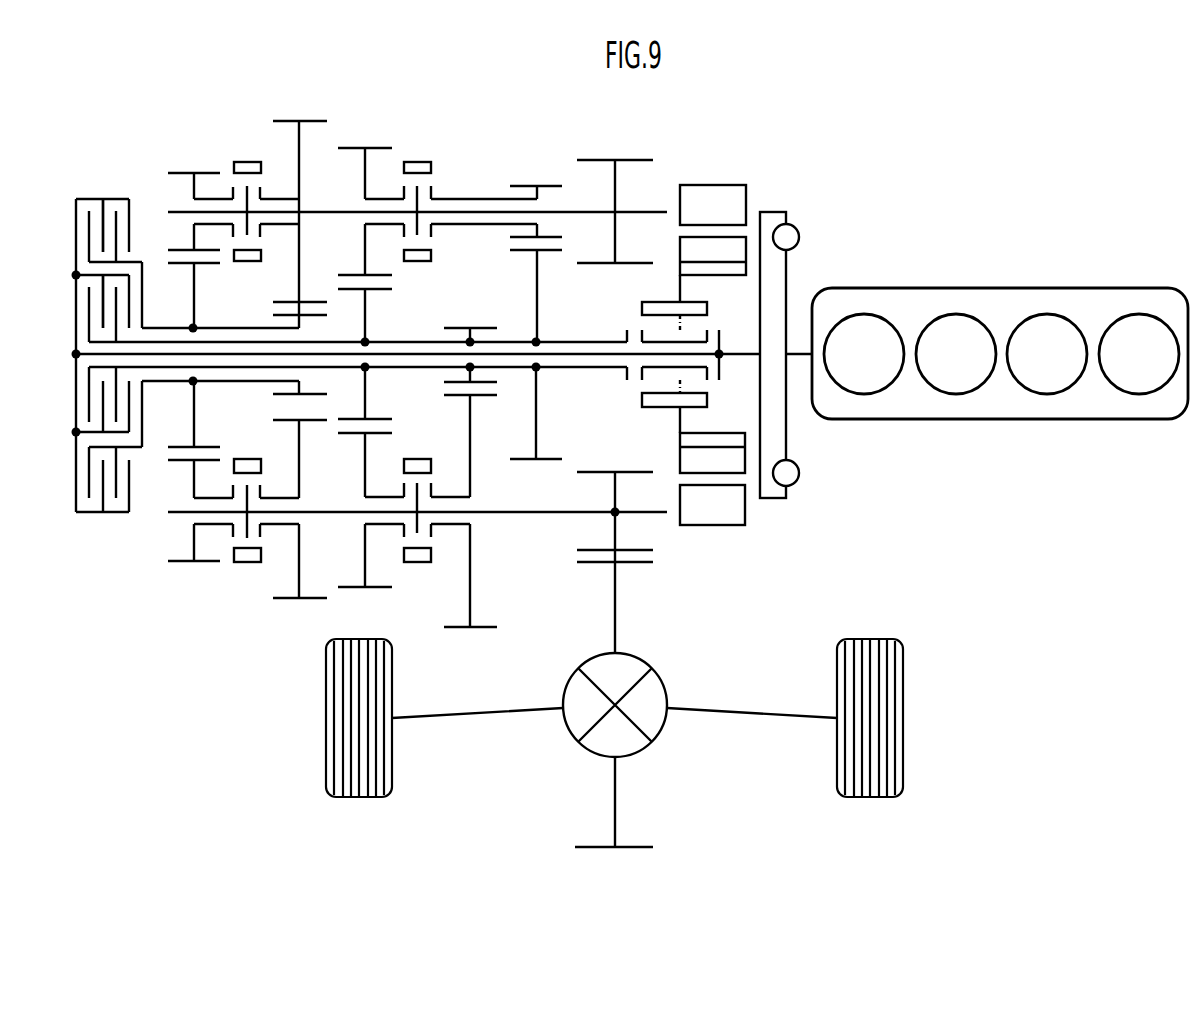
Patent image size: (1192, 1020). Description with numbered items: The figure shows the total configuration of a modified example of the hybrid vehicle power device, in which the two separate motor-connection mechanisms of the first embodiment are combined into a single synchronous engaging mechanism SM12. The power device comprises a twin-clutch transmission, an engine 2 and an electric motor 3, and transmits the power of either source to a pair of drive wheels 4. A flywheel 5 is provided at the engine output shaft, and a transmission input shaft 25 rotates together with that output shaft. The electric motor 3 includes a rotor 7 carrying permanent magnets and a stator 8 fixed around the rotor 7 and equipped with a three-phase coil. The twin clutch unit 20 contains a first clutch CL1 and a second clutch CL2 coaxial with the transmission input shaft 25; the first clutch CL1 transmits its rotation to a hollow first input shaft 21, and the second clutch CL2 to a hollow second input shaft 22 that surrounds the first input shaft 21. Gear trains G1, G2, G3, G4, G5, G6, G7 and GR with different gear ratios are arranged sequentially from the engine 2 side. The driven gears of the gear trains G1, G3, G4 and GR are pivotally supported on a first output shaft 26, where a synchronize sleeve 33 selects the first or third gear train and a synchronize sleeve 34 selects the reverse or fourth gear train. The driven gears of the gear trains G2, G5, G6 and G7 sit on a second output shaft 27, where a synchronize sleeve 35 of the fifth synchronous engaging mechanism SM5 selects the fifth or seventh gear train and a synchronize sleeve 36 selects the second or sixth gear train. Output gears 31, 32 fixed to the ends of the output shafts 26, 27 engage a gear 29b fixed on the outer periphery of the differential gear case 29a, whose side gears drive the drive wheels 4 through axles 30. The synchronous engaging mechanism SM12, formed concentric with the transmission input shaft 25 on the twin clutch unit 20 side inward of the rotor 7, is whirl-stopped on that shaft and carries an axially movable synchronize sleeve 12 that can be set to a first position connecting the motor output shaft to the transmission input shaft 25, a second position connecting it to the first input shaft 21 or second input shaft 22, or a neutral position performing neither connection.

The engine 2 is at (901, 288).
The electric motor 3 is at (751, 311).
The drive wheels 4 is at (326, 773).
The flywheel 5 is at (776, 212).
The rotor 7 is at (733, 250).
The stator 8 is at (732, 197).
The synchronize sleeve 12 is at (657, 402).
The twin clutch unit 20 is at (103, 188).
The first input shaft 21 is at (513, 342).
The second input shaft 22 is at (162, 327).
The transmission input shaft 25 is at (165, 356).
The first output shaft 26 is at (537, 514).
The second output shaft 27 is at (593, 211).
The gear case 29a is at (655, 735).
The gear 29b is at (617, 605).
The axles 30 is at (463, 717).
The output gear 31 is at (617, 527).
The output gear 32 is at (618, 178).
The synchronize sleeve 33 is at (417, 457).
The synchronize sleeve 34 is at (247, 457).
The synchronize sleeve 35 is at (417, 264).
The synchronize sleeve 36 is at (247, 264).
The first clutch CL1 is at (72, 301).
The second clutch CL2 is at (72, 225).
The first gear train G1 is at (470, 645).
The second gear train G2 is at (300, 207).
The third gear train G3 is at (365, 605).
The fourth gear train G4 is at (194, 579).
The fifth gear train G5 is at (371, 156).
The sixth gear train G6 is at (200, 172).
The seventh gear train G7 is at (536, 168).
The reverse gear train GR is at (300, 618).
The fifth synchronous engaging mechanism SM5 is at (382, 184).
The synchronous engaging mechanism SM12 is at (647, 311).